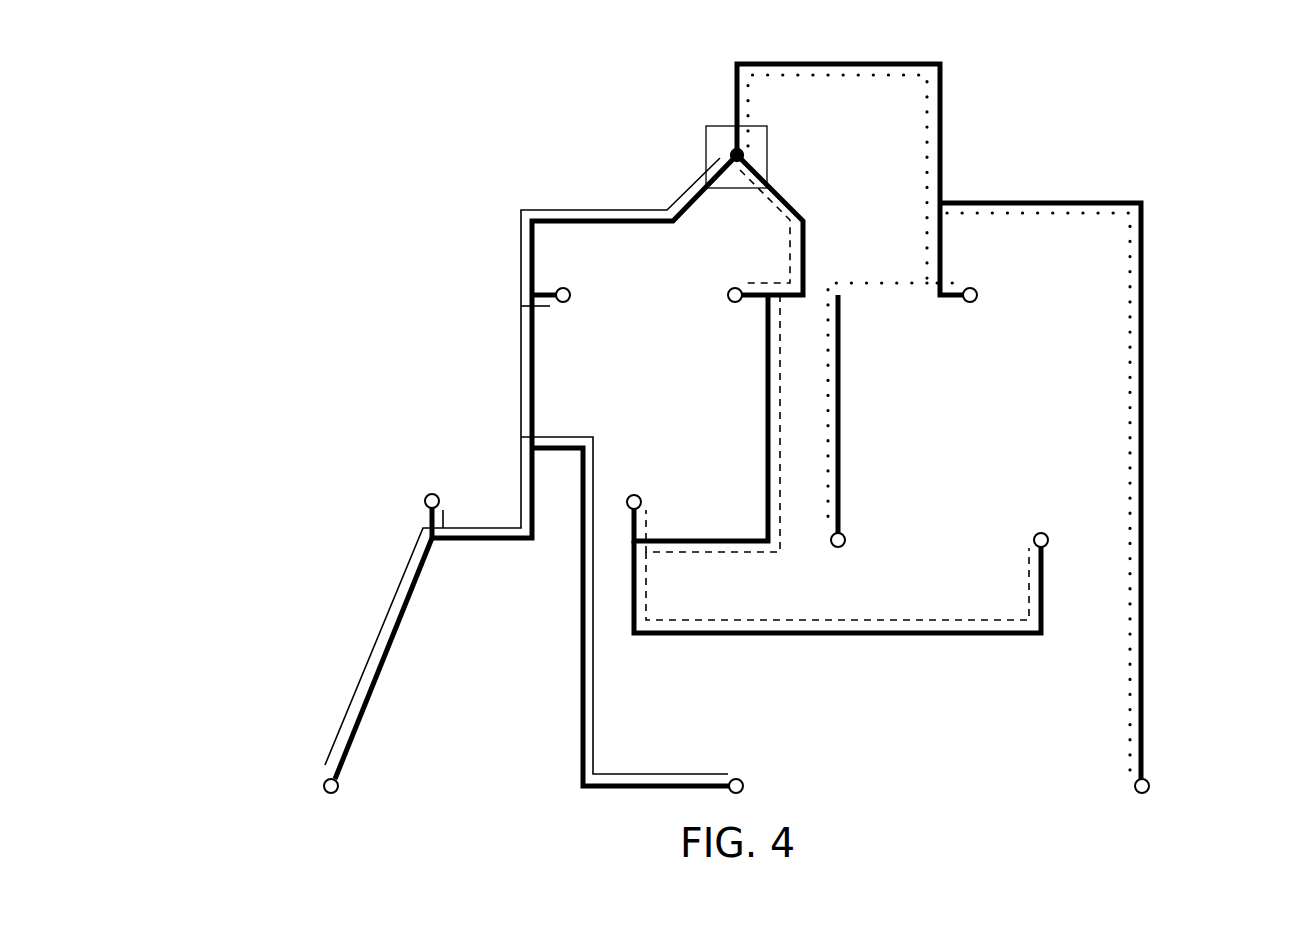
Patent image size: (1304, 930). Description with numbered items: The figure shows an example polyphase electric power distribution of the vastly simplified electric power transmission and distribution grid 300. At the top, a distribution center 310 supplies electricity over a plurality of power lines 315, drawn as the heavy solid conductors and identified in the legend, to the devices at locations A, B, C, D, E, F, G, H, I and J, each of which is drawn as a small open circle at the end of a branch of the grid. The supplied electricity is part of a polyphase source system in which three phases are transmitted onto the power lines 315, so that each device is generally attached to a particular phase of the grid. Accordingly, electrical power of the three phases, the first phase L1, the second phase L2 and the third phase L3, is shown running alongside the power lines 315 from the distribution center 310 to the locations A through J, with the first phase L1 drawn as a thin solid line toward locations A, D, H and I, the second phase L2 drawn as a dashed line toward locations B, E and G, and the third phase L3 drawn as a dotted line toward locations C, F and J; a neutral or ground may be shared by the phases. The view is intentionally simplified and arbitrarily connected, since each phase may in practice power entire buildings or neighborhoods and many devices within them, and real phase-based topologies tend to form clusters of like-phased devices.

The electric power transmission and distribution grid 300 is at (1213, 102).
The distribution center 310 is at (706, 124).
The power lines 315 is at (196, 79).
The first phase L1 is at (638, 209).
The second phase L2 is at (776, 208).
The third phase L3 is at (880, 78).
The location A is at (576, 309).
The location B is at (722, 279).
The location C is at (981, 277).
The location D is at (415, 500).
The location E is at (646, 487).
The location F is at (823, 520).
The location G is at (1053, 521).
The location H is at (315, 768).
The location I is at (743, 768).
The location J is at (1151, 768).